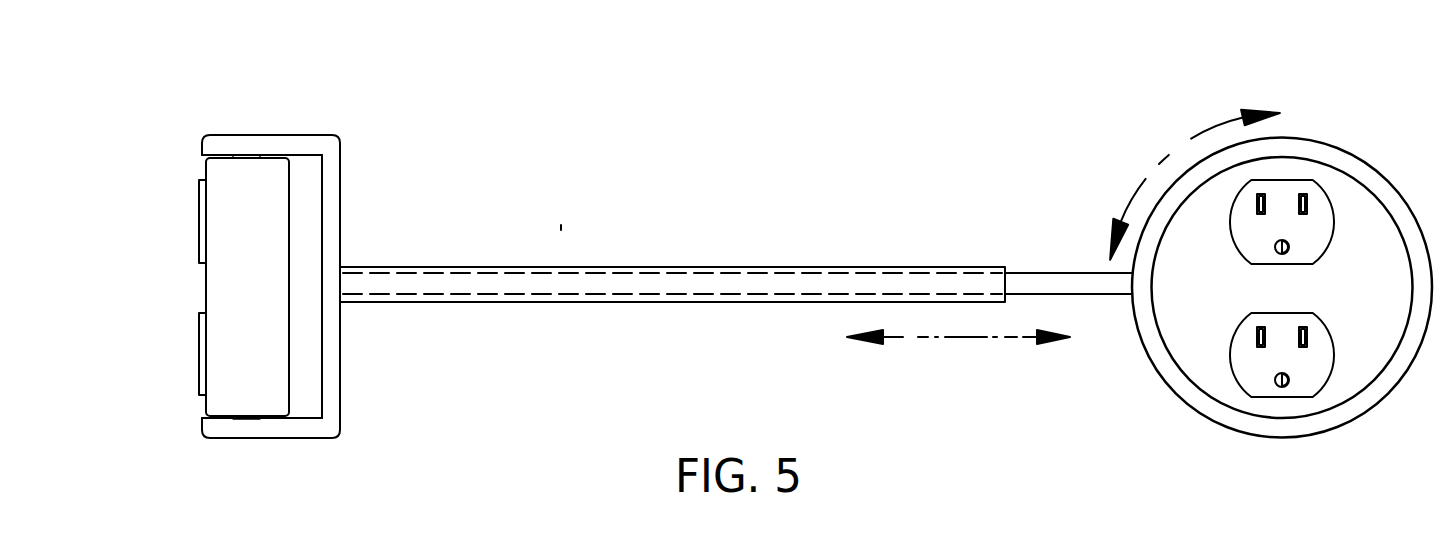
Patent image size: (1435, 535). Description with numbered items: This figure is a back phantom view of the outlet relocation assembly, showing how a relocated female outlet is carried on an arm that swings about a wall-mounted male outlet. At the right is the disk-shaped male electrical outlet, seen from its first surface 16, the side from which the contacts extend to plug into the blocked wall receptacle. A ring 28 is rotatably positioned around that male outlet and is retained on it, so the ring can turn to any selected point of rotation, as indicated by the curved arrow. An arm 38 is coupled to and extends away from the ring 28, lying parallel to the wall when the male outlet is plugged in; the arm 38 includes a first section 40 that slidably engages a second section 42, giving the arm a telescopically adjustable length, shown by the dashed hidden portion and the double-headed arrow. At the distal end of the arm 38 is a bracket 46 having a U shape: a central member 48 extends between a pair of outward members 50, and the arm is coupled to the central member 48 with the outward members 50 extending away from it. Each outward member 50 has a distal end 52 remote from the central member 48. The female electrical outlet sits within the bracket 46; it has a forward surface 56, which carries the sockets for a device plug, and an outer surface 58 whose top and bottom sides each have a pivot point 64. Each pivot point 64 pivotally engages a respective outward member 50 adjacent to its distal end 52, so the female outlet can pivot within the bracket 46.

The first surface 16 is at (1362, 232).
The ring 28 is at (1307, 143).
The arm 38 is at (755, 266).
The first section 40 is at (1066, 232).
The second section 42 is at (561, 225).
The bracket 46 is at (340, 135).
The central member 48 is at (338, 215).
The outward members 50 is at (257, 135).
The distal end 52 is at (203, 137).
The forward surface 56 is at (203, 287).
The outer surface 58 is at (266, 347).
The pivot point 64 is at (243, 157).